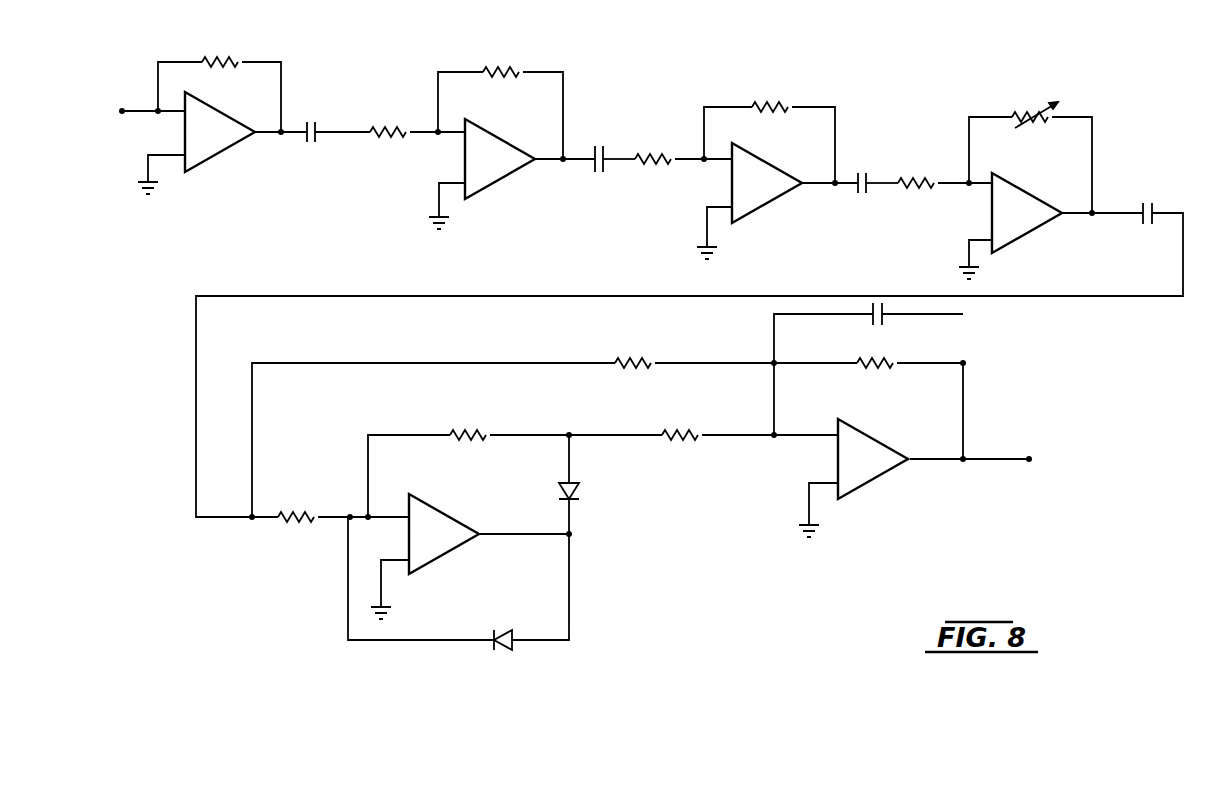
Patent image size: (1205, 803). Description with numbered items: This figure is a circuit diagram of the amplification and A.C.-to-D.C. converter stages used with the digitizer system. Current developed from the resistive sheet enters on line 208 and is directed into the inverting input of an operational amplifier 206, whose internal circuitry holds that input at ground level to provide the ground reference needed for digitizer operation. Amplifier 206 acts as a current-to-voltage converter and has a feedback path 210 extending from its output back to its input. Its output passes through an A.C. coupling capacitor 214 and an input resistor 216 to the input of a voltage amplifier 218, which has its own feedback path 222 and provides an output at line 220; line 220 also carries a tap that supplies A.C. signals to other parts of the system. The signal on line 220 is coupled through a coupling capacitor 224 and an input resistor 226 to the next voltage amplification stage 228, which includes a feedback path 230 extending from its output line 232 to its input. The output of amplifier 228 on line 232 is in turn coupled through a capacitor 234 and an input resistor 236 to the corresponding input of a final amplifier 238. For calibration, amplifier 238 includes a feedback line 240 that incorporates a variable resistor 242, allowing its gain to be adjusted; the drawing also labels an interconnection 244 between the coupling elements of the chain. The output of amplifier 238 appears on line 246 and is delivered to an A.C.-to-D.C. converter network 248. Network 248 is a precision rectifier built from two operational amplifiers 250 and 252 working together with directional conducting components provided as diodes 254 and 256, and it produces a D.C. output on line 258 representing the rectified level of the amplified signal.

The operational amplifier 206 is at (228, 150).
The line 208 is at (134, 114).
The feedback path 210 is at (281, 95).
The A.C. coupling capacitor 214 is at (313, 130).
The input resistor 216 is at (375, 134).
The voltage amplifier 218 is at (495, 182).
The output line 220 is at (573, 162).
The feedback path 222 is at (547, 72).
The coupling capacitor 224 is at (592, 155).
The input resistor 226 is at (660, 167).
The voltage amplification stage 228 is at (780, 200).
The feedback path 230 is at (807, 107).
The output line 232 is at (847, 178).
The capacitor 234 is at (867, 180).
The input resistor 236 is at (905, 192).
The amplifier 238 is at (1022, 242).
The feedback line 240 is at (1093, 160).
The variable resistor 242 is at (1030, 105).
The connection line 244 is at (633, 158).
The line 246 is at (1133, 215).
The A.C. to D.C. converter network 248 is at (845, 580).
The operational amplifier 250 is at (458, 517).
The operational amplifier 252 is at (878, 480).
The diode 254 is at (578, 490).
The diode 256 is at (512, 650).
The line 258 is at (993, 457).